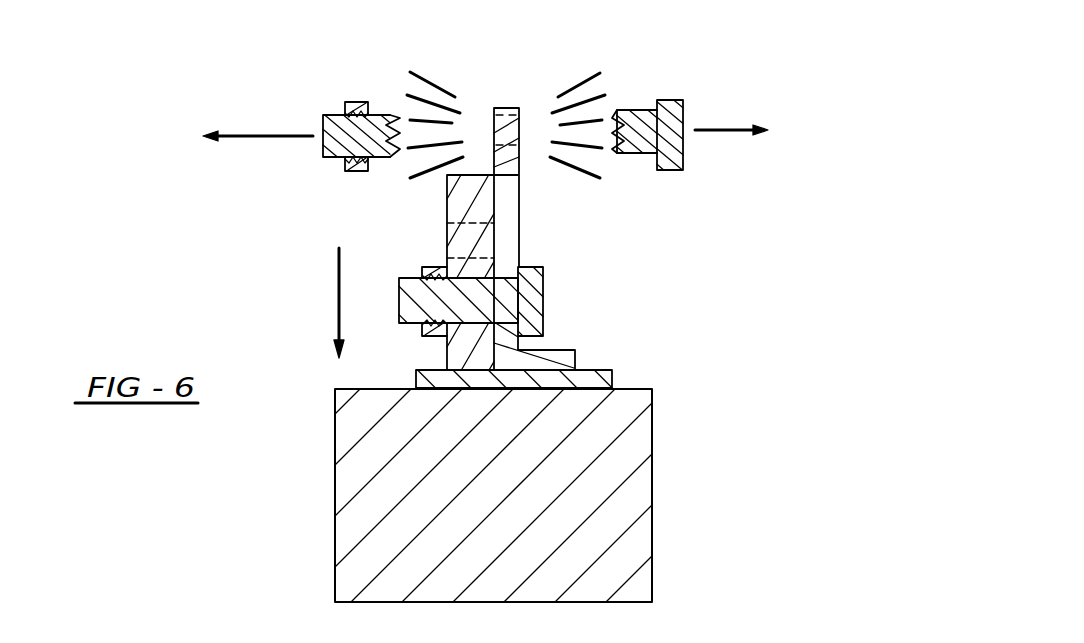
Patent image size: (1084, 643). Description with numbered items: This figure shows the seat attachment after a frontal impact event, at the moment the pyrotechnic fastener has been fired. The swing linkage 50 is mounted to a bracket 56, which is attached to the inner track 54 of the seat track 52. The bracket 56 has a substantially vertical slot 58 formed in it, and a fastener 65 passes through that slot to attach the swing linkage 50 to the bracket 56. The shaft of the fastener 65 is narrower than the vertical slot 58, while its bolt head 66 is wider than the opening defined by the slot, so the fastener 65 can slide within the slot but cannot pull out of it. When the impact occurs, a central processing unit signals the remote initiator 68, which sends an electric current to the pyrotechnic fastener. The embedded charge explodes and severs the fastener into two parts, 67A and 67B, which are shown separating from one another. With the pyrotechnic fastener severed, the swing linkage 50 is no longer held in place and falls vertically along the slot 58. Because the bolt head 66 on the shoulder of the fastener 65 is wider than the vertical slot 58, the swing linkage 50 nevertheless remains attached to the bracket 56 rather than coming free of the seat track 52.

The swing linkage 50 is at (452, 214).
The seat track 52 is at (358, 522).
The inner track 54 is at (602, 382).
The bracket 56 is at (563, 355).
The vertical slot 58 is at (512, 178).
The fastener 65 is at (543, 278).
The bolt head 66 is at (543, 313).
The severed part of pyrotechnic fastener 67A is at (353, 104).
The severed part of pyrotechnic fastener 67B is at (665, 107).
The remote initiator 68 is at (352, 172).